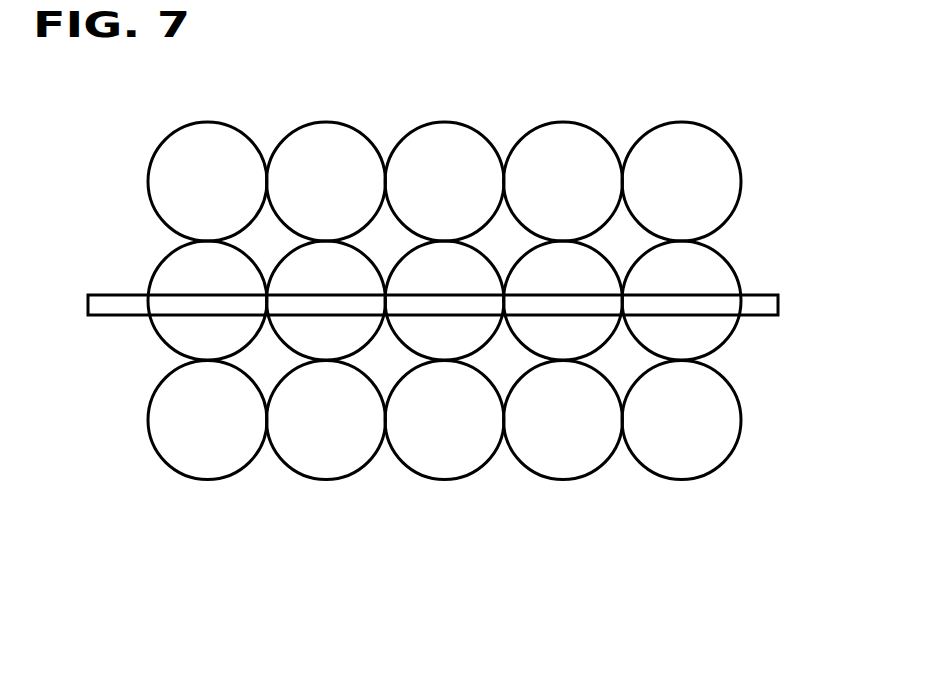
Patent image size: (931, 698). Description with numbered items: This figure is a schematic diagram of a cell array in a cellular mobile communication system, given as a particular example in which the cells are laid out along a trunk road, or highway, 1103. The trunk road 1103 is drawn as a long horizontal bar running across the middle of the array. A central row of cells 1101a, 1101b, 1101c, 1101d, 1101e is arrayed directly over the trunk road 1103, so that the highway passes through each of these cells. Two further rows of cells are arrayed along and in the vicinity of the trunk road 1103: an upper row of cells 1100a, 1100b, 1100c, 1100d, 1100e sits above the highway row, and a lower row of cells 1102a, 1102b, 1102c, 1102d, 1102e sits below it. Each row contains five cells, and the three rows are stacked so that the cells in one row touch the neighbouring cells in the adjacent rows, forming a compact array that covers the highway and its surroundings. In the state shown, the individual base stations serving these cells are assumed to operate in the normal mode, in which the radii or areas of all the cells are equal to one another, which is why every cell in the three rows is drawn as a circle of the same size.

The cell 1100a is at (210, 152).
The cell 1100b is at (340, 150).
The cell 1100c is at (458, 148).
The cell 1100d is at (575, 148).
The cell 1100e is at (695, 150).
The cell 1101a is at (168, 325).
The cell 1101b is at (307, 347).
The cell 1101c is at (423, 347).
The cell 1101d is at (540, 345).
The cell 1101e is at (708, 335).
The cell 1102a is at (200, 465).
The cell 1102b is at (330, 470).
The cell 1102c is at (457, 473).
The cell 1102d is at (592, 463).
The cell 1102e is at (707, 467).
The trunk road 1103 is at (138, 300).